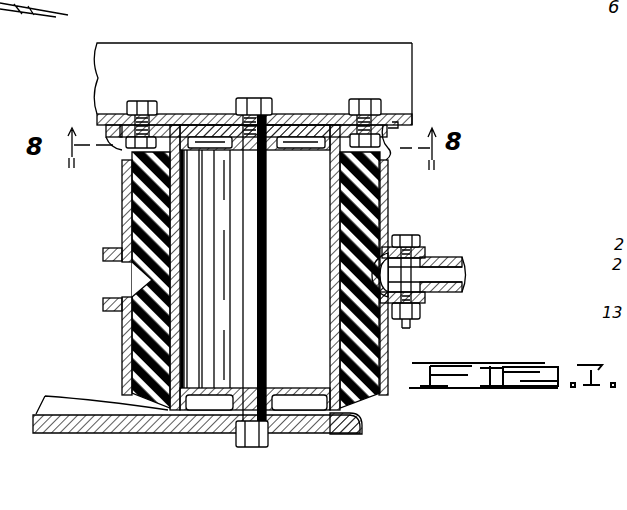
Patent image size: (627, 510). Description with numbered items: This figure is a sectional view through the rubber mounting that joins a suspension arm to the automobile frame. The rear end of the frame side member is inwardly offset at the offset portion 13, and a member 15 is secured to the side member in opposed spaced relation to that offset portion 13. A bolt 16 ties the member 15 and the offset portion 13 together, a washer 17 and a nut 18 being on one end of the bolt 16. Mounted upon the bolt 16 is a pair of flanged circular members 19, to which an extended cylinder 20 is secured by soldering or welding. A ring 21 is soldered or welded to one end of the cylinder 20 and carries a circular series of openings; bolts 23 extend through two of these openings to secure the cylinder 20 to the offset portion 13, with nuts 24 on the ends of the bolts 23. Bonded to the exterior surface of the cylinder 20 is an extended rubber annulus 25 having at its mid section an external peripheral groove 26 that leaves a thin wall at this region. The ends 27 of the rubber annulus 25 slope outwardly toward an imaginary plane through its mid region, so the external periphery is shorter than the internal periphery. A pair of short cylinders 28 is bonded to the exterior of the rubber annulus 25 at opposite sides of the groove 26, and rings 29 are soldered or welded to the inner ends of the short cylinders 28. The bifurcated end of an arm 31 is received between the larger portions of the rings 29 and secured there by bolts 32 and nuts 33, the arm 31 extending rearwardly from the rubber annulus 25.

The offset portion 13 is at (412, 68).
The member 15 is at (366, 430).
The bolt 16 is at (258, 270).
The washer 17 is at (286, 428).
The nut 18 is at (262, 424).
The flanged circular members 19 is at (199, 154).
The cylinder 20 is at (334, 342).
The ring 21 is at (385, 136).
The bolts 23 is at (149, 103).
The nuts 24 is at (130, 150).
The rubber annulus 25 is at (387, 212).
The external peripheral groove 26 is at (340, 285).
The ends 27 is at (133, 397).
The short cylinders 28 is at (388, 222).
The rings 29 is at (428, 251).
The arm 31 is at (470, 266).
The bolts 32 is at (420, 246).
The nuts 33 is at (422, 318).